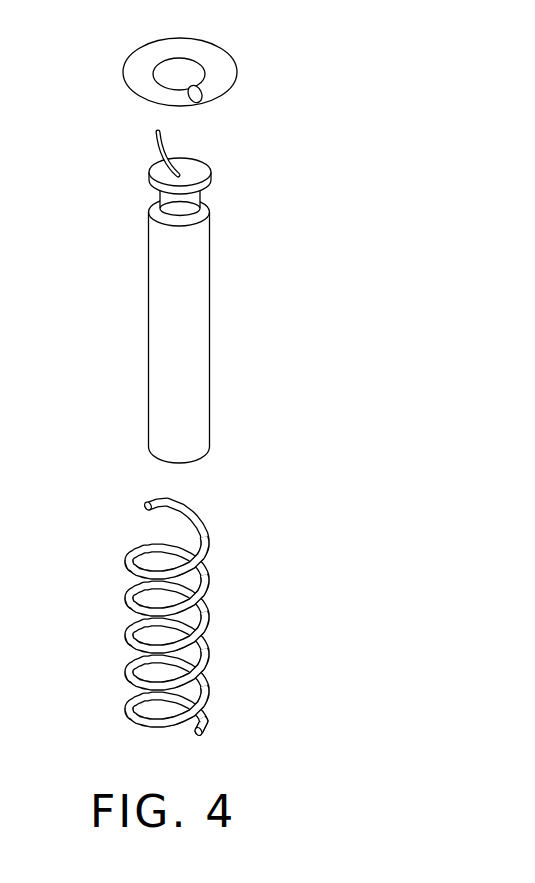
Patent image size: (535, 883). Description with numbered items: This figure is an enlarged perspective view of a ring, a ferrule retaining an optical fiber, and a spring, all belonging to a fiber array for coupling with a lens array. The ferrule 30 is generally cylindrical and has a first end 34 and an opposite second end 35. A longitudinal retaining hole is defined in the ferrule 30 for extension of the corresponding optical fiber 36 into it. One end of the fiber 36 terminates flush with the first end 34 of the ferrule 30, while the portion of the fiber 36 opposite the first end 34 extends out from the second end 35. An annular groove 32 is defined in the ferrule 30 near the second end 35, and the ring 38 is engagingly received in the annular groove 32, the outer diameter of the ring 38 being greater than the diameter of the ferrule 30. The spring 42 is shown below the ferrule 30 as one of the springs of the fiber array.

The ferrule 30 is at (226, 307).
The annular groove 32 is at (192, 210).
The first end 34 is at (198, 458).
The second end 35 is at (195, 172).
The optical fiber 36 is at (171, 144).
The ring 38 is at (145, 62).
The spring 42 is at (207, 526).